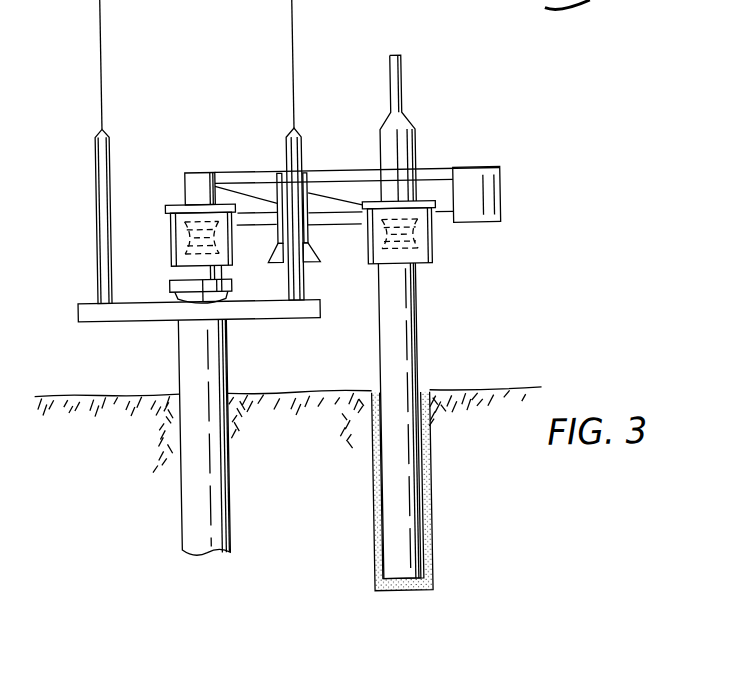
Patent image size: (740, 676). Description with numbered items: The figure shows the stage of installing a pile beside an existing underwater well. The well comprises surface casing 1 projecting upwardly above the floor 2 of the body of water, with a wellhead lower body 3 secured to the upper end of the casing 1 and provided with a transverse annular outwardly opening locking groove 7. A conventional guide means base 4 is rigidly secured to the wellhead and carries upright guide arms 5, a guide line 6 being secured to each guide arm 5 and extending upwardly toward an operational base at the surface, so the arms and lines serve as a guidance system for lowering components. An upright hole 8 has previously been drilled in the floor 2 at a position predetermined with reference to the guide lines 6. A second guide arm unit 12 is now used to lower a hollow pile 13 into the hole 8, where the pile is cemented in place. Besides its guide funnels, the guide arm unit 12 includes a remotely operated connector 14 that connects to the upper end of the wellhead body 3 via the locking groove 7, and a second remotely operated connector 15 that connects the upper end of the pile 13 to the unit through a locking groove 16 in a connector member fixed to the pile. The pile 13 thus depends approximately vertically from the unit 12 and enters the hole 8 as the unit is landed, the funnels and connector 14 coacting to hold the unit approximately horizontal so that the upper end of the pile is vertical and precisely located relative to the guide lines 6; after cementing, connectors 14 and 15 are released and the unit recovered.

The surface casing 1 is at (227, 357).
The floor of the body of water 2 is at (126, 393).
The wellhead lower body 3 is at (222, 277).
The guide means base 4 is at (120, 319).
The guide arm 5 is at (113, 145).
The guide line 6 is at (107, 37).
The locking groove 7 is at (176, 243).
The upright hole 8 is at (430, 470).
The second guide arm unit 12 is at (425, 168).
The hollow pile 13 is at (424, 354).
The remotely operated connector 14 is at (170, 213).
The second remotely operated connector 15 is at (433, 265).
The locking groove 16 is at (426, 242).